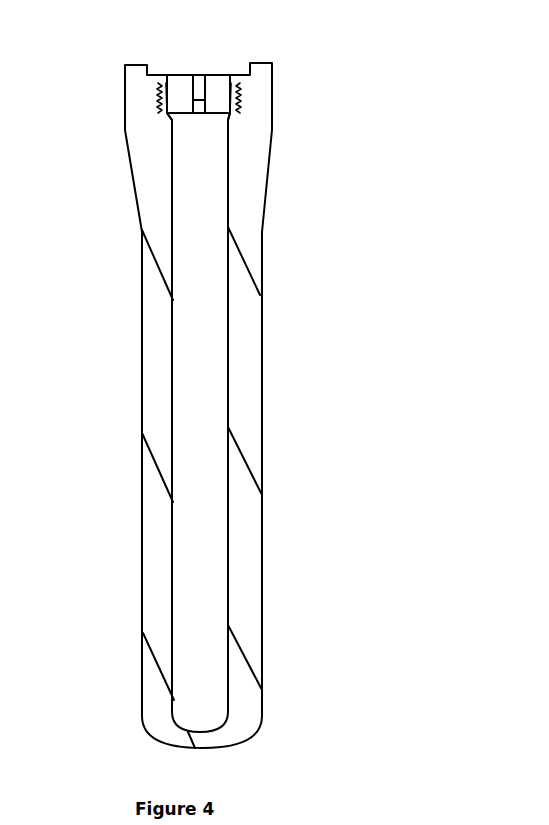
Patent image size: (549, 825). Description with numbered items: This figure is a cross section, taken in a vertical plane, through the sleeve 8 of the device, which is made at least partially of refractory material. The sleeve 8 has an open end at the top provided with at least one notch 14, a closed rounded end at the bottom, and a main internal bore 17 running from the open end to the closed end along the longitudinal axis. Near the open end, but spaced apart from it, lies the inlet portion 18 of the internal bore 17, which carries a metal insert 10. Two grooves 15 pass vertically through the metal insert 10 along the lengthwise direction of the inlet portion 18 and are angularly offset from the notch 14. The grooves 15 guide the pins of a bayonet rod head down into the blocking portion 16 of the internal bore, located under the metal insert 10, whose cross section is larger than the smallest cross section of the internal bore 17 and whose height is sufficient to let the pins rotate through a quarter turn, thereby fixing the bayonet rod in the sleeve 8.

The sleeve 8 is at (227, 430).
The metal insert 10 is at (237, 100).
The notch 14 is at (272, 75).
The grooves 15 is at (198, 99).
The blocking portion 16 is at (168, 118).
The main internal bore 17 is at (207, 292).
The inlet portion 18 is at (170, 100).